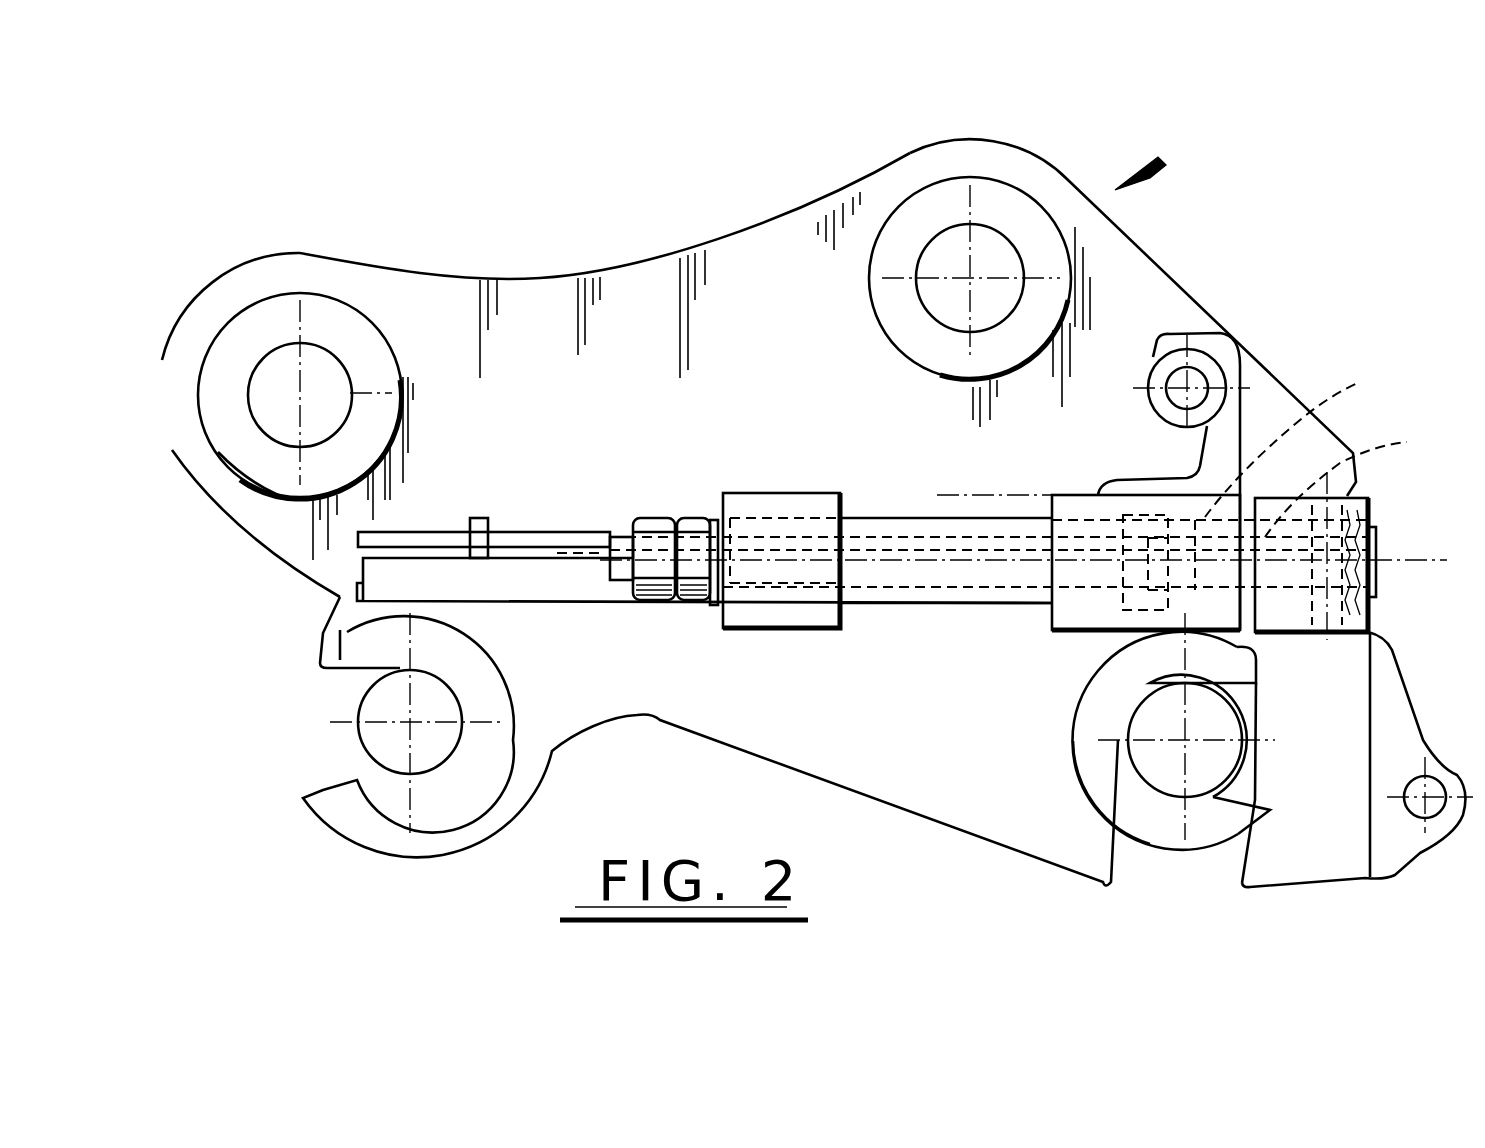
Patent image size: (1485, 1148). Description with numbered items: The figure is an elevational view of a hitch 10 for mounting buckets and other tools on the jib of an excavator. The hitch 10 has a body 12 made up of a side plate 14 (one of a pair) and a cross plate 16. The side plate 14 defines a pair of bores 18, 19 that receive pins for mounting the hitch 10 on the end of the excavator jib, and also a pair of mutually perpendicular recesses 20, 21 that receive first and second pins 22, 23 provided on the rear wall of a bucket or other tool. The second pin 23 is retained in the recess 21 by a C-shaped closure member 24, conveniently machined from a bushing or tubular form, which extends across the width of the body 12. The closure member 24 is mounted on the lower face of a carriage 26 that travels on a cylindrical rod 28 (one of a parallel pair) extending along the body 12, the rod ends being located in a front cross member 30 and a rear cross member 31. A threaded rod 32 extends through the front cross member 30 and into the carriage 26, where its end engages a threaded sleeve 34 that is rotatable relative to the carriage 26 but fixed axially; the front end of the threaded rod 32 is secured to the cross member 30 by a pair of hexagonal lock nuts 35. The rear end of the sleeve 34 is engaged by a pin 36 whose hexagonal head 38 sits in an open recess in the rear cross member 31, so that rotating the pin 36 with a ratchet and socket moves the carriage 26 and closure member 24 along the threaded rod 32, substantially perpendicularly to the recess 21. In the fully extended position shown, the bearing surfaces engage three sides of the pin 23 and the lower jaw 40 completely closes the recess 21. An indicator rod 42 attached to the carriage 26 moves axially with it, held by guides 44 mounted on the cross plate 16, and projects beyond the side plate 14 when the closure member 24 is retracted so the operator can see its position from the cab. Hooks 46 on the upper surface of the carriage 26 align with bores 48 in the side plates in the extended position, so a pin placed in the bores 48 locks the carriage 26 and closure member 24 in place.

The hitch 10 is at (1160, 162).
The body 12 is at (1155, 255).
The side plate 14 is at (758, 230).
The cross plate 16 is at (575, 593).
The bore 18 is at (315, 345).
The bore 19 is at (953, 247).
The recess 20 is at (360, 763).
The recess 21 is at (1118, 850).
The first pin 22 is at (353, 700).
The second pin 23 is at (1217, 713).
The C-shaped closure member 24 is at (1090, 797).
The carriage 26 is at (1053, 630).
The cylindrical rod 28 is at (905, 518).
The front cross member 30 is at (783, 493).
The rear cross member 31 is at (1347, 495).
The threaded rod 32 is at (977, 533).
The threaded sleeve 34 is at (1306, 438).
The hexagonal lock nuts 35 is at (692, 522).
The pin 36 is at (1359, 475).
The hexagonal head 38 is at (1376, 530).
The lower jaw 40 is at (1192, 853).
The indicator rod 42 is at (567, 532).
The guides 44 is at (480, 518).
The hooks 46 is at (1232, 363).
The bore 48 is at (1193, 370).